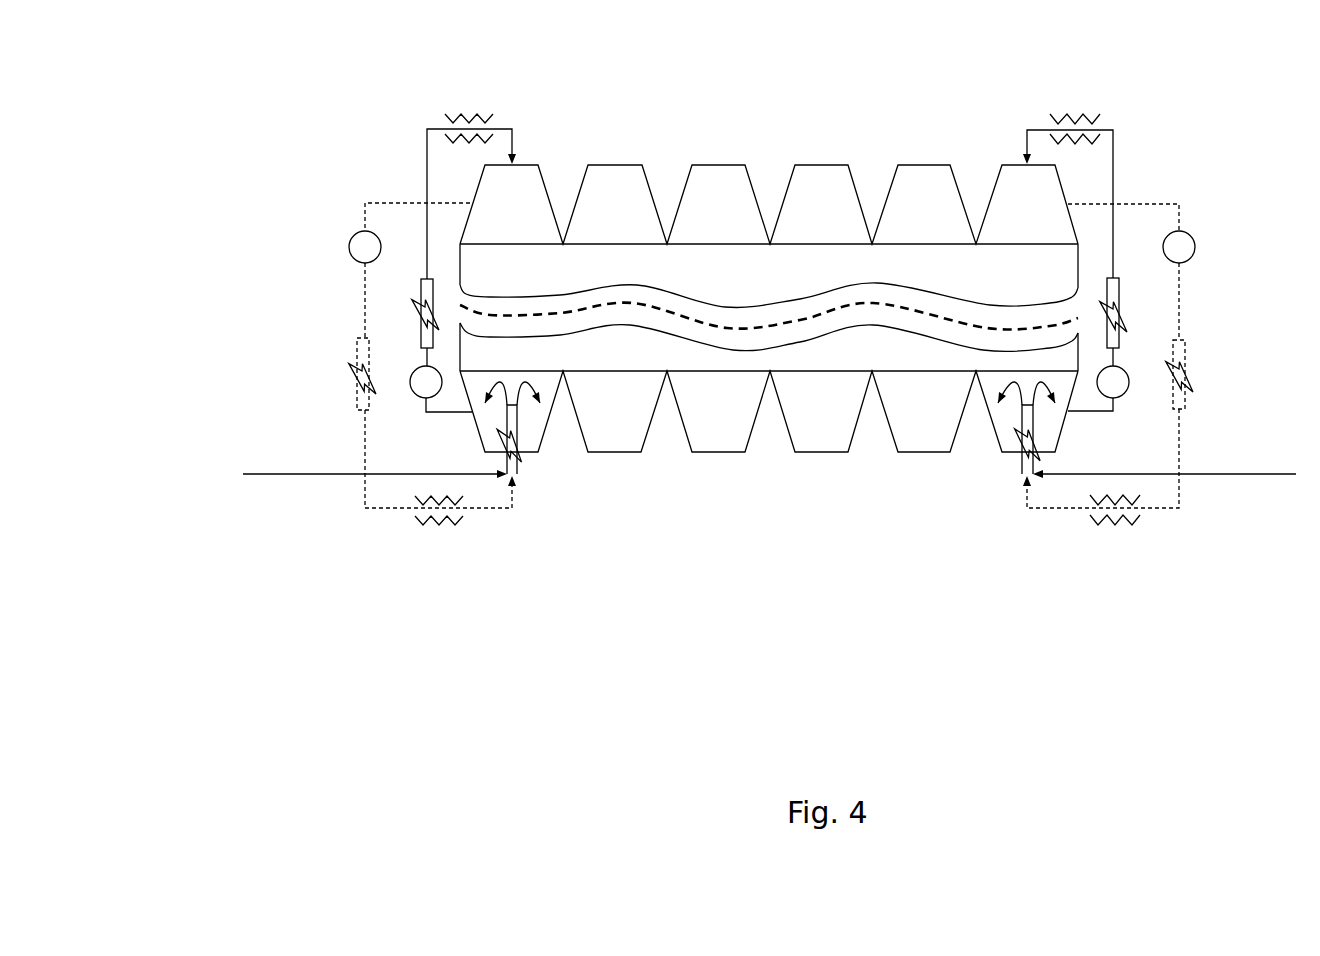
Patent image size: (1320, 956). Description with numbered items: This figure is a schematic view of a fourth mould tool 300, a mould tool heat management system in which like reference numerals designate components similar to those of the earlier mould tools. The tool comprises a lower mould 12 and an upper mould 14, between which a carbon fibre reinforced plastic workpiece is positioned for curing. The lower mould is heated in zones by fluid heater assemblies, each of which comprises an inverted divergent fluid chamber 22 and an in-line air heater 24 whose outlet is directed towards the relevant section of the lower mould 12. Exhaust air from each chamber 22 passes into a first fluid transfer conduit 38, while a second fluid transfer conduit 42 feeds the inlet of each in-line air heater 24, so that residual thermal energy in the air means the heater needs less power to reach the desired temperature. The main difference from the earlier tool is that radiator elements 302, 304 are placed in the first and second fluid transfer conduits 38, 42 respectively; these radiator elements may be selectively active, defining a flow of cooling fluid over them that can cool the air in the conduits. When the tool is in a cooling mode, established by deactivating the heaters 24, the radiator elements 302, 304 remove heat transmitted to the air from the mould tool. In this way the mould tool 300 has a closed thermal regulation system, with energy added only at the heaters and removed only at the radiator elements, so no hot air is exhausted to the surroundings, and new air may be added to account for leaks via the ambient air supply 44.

The fourth mould tool 300 is at (284, 333).
The lower mould 12 is at (880, 360).
The upper mould 14 is at (752, 285).
The inverted divergent fluid chamber 22 is at (547, 418).
The in-line air heater 24 is at (523, 463).
The first fluid transfer conduit 38 is at (425, 183).
The second fluid transfer conduit 42 is at (1178, 297).
The ambient air supply 44 is at (1262, 477).
The radiator element 302 is at (477, 115).
The radiator element 304 is at (1110, 525).